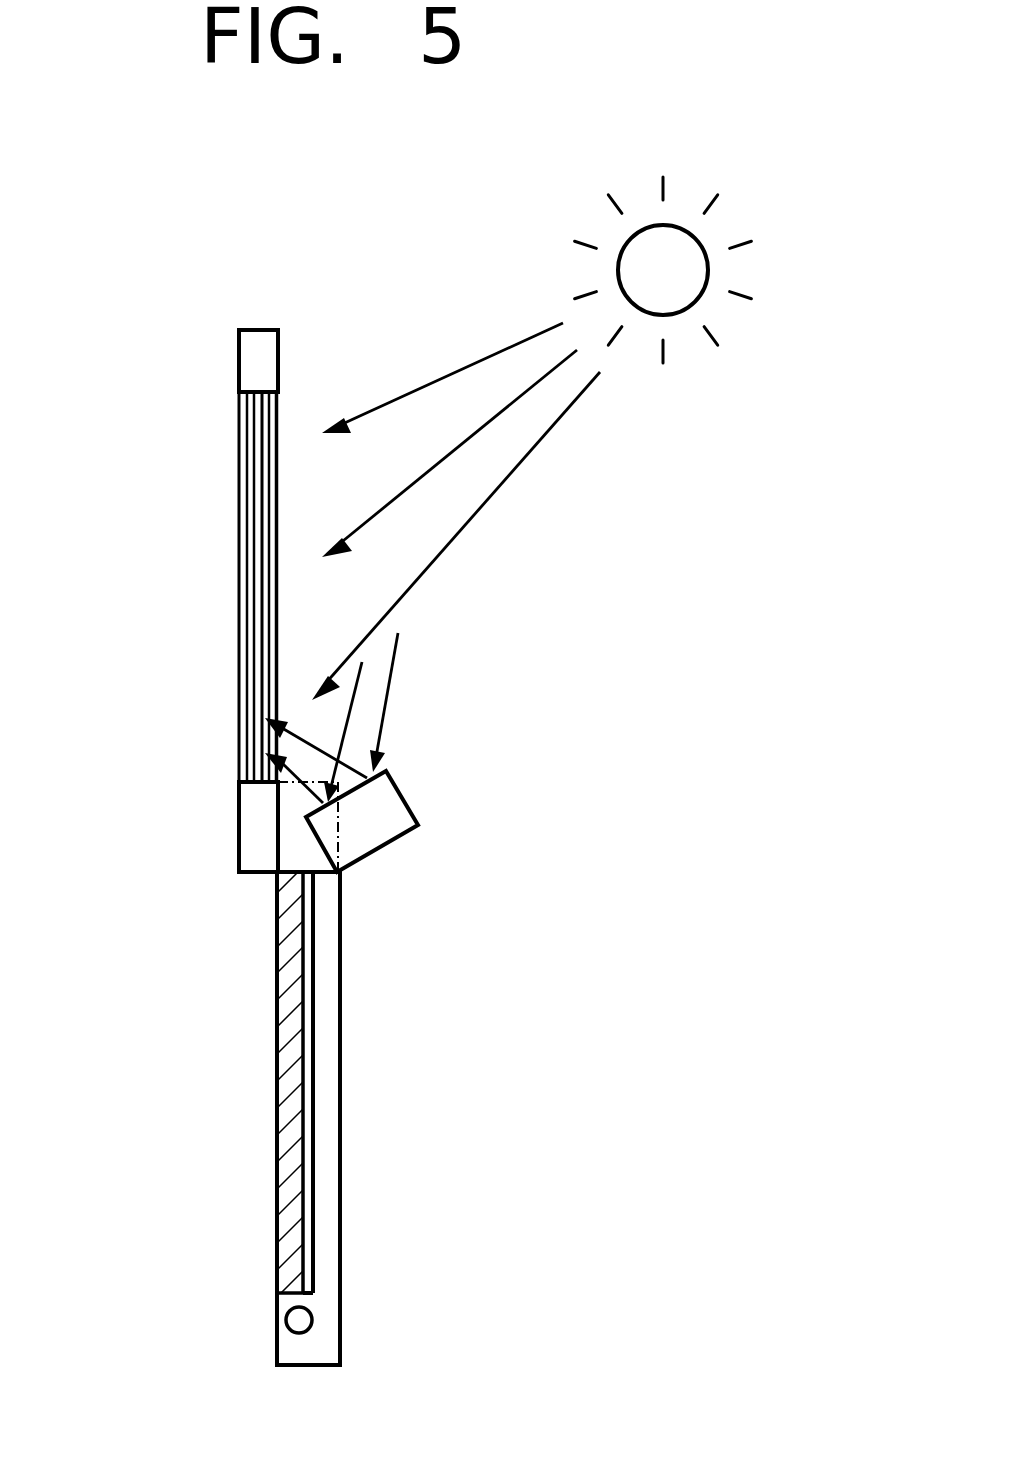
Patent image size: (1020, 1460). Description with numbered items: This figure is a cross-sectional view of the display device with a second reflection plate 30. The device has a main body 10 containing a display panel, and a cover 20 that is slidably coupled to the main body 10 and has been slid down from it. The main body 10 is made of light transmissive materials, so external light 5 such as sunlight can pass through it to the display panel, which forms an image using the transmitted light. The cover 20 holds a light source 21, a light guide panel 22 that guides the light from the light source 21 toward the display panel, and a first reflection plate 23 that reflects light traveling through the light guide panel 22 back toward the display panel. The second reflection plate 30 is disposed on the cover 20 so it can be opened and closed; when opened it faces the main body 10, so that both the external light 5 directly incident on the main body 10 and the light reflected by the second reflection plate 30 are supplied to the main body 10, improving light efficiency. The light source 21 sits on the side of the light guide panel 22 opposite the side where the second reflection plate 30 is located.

The external light 5 is at (732, 318).
The main body 10 is at (214, 498).
The cover 20 is at (330, 1140).
The light source 21 is at (299, 1320).
The light guide panel 22 is at (285, 1028).
The first reflection plate 23 is at (307, 1078).
The second reflection plate 30 is at (370, 833).